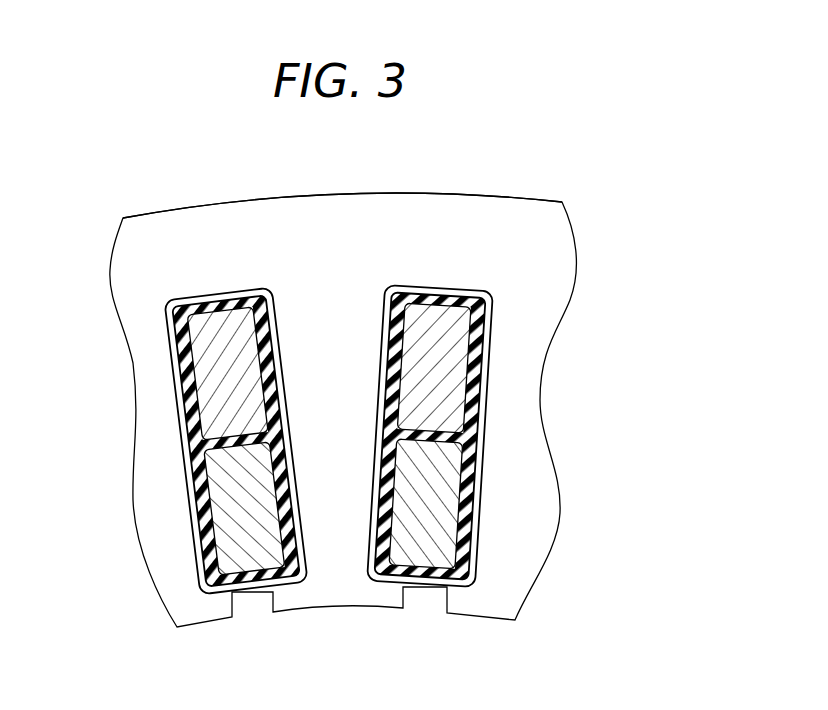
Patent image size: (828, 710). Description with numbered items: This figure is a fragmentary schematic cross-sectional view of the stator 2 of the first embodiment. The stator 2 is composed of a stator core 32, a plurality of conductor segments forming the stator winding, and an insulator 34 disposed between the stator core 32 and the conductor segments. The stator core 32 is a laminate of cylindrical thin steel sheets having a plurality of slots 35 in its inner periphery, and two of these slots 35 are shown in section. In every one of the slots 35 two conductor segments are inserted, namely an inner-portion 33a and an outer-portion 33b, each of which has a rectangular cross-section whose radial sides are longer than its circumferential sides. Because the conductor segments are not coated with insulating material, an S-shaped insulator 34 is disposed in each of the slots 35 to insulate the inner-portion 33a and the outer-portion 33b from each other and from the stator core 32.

The stator 2 is at (604, 226).
The stator core 32 is at (360, 215).
The inner-portion 33a is at (443, 517).
The outer-portion 33b is at (452, 332).
The insulator 34 is at (478, 358).
The slot 35 is at (210, 293).